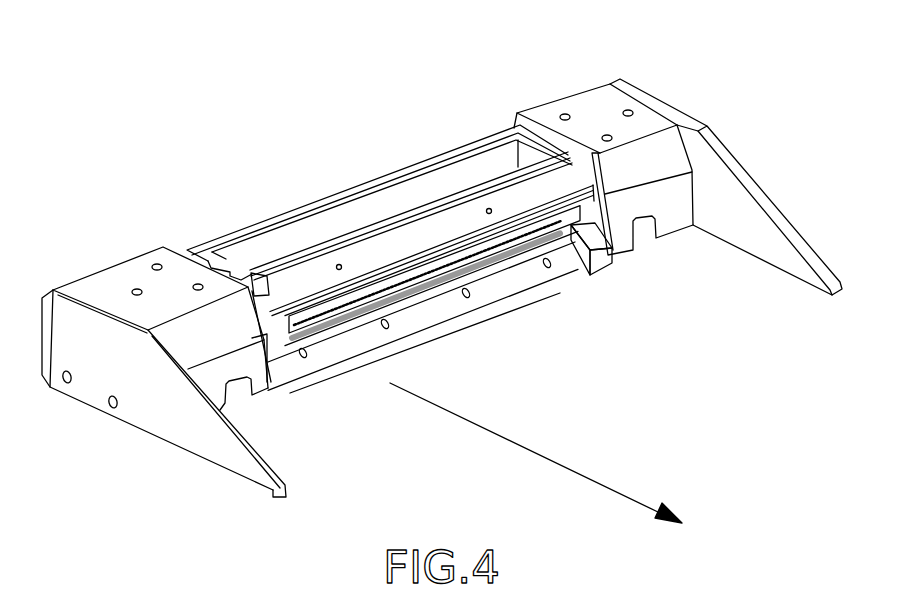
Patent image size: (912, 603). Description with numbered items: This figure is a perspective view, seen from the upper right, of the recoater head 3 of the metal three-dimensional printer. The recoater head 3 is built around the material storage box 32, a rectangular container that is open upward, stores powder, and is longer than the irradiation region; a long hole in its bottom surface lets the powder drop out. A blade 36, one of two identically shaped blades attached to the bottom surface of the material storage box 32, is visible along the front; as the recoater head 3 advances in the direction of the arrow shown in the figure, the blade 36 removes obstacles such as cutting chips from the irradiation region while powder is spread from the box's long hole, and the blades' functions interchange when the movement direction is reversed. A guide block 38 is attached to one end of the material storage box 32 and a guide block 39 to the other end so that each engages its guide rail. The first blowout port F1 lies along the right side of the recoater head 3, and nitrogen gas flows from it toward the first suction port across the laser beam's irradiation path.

The recoater head 3 is at (442, 268).
The material storage box 32 is at (383, 200).
The blade 36 is at (452, 323).
The guide block 38 is at (668, 230).
The guide block 39 is at (262, 390).
The first blowout port F1 is at (497, 253).